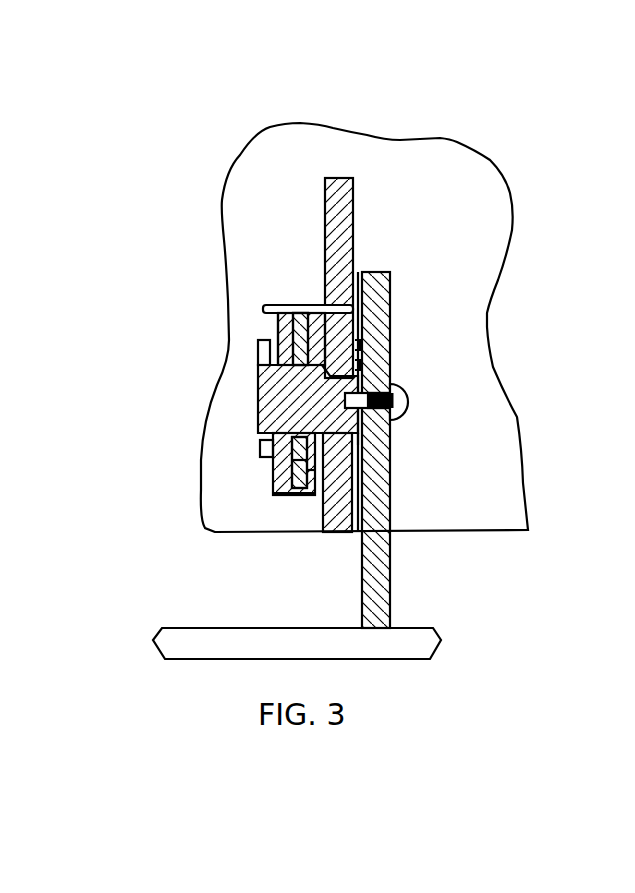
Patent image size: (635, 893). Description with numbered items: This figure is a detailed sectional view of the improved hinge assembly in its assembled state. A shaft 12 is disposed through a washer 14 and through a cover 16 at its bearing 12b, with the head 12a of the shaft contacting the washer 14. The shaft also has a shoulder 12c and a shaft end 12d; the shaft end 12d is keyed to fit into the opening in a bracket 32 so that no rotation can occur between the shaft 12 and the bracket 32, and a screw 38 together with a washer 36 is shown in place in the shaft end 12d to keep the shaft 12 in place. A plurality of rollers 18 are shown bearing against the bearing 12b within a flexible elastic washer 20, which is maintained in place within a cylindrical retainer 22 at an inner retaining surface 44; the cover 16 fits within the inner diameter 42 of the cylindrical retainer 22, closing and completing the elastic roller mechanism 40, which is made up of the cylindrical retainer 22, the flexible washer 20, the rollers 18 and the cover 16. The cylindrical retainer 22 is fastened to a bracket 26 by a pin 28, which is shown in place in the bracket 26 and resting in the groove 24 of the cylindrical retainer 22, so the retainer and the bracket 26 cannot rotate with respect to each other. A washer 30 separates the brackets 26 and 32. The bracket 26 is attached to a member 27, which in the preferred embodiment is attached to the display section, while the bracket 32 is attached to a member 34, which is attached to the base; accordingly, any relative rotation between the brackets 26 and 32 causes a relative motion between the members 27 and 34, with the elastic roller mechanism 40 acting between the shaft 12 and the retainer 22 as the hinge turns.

The shaft 12 is at (258, 412).
The head 12a is at (262, 345).
The bearing 12b is at (260, 382).
The shoulder 12c is at (358, 368).
The shaft end 12d is at (390, 432).
The washer 14 is at (268, 342).
The cover 16 is at (298, 466).
The rollers 18 is at (292, 467).
The elastic washer 20 is at (390, 507).
The cylindrical retainer 22 is at (280, 497).
The slot 24 is at (283, 330).
The bracket 26 is at (355, 230).
The member 27 is at (463, 500).
The pin 28 is at (300, 316).
The washer 30 is at (358, 345).
The bracket 32 is at (390, 272).
The member 34 is at (405, 628).
The washer 36 is at (397, 388).
The screw 38 is at (405, 400).
The elastic roller mechanism 40 is at (318, 303).
The inner diameter 42 is at (290, 490).
The inner retaining surface 44 is at (290, 480).